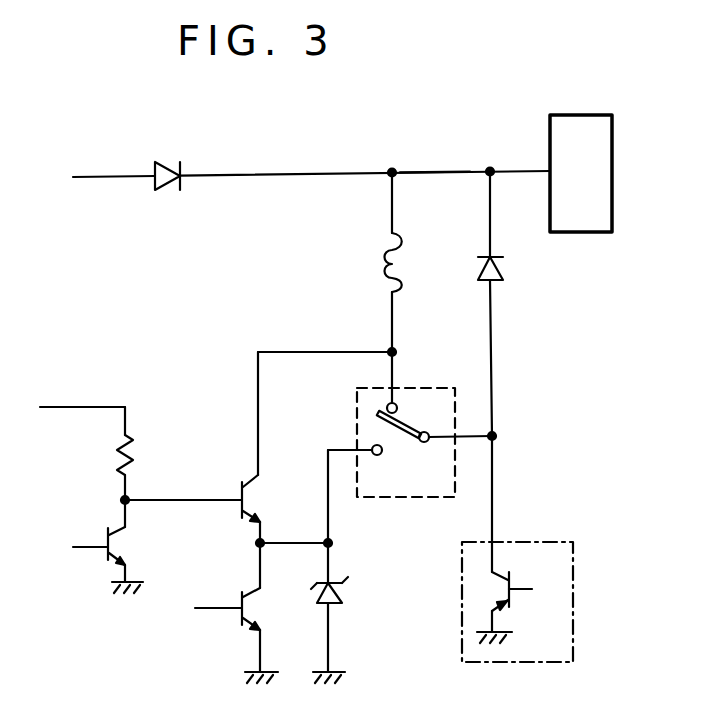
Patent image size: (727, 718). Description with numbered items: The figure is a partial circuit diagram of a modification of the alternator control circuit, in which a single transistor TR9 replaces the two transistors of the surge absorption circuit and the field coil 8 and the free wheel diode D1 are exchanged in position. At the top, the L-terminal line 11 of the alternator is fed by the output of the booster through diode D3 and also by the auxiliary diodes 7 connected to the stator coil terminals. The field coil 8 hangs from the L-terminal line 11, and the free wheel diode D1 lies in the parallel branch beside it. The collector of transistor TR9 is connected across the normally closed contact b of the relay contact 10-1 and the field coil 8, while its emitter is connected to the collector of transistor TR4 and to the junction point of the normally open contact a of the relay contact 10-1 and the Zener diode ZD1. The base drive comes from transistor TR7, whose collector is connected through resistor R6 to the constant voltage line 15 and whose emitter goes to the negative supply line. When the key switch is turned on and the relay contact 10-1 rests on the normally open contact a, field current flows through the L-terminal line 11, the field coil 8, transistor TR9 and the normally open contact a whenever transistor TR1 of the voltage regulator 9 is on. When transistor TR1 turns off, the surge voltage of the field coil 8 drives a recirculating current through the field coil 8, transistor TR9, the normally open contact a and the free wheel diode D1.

The diode D3 is at (168, 151).
The L-terminal line 11 is at (434, 172).
The auxiliary diodes 7 is at (612, 143).
The field coil 8 is at (404, 262).
The free wheel diode D1 is at (505, 266).
The relay contact 10-1 is at (357, 398).
The normally closed contact b is at (403, 382).
The normally open contact a is at (357, 494).
The constant voltage line 15 is at (95, 406).
The resistor R6 is at (110, 455).
The transistor TR7 is at (79, 546).
The transistor TR9 is at (265, 498).
The transistor TR4 is at (238, 617).
The Zener diode ZD1 is at (353, 613).
The voltage regulator 9 is at (575, 563).
The transistor TR1 is at (518, 597).